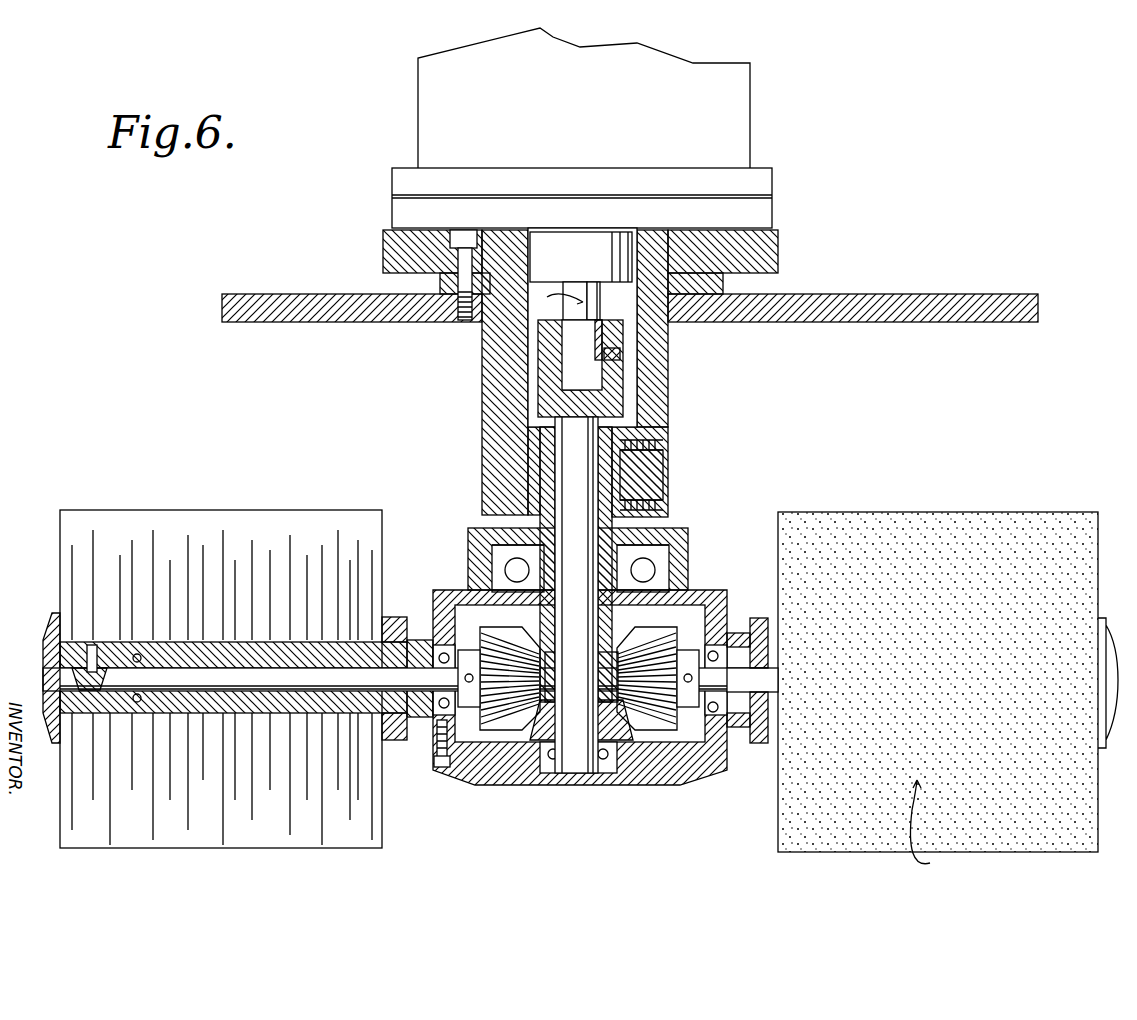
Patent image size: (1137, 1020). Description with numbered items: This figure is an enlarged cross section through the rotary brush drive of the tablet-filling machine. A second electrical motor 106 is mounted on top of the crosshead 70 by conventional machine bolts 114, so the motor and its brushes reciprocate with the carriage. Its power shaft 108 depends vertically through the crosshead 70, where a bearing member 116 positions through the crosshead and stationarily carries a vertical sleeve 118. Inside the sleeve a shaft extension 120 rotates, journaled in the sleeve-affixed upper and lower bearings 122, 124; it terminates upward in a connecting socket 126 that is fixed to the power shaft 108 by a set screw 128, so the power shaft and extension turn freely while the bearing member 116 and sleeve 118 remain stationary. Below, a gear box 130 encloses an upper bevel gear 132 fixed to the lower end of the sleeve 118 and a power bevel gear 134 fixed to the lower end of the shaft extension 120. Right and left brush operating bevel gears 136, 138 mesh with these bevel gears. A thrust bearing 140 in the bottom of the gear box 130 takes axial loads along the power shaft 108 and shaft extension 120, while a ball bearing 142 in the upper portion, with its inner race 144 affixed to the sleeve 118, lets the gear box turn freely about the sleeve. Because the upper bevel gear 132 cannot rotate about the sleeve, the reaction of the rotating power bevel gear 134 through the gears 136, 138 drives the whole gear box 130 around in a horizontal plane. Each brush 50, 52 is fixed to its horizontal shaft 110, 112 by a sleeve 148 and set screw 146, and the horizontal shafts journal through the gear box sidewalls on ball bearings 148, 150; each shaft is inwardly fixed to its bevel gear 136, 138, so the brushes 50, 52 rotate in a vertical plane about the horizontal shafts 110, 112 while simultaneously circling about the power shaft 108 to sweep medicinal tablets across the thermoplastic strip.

The brush 50 is at (952, 540).
The brush 52 is at (204, 556).
The crosshead 70 is at (886, 300).
The second electrical motor 106 is at (740, 108).
The power shaft 108 is at (582, 337).
The horizontal shaft 110 is at (746, 674).
The horizontal shaft 112 is at (384, 672).
The machine bolts 114 is at (452, 240).
The bearing member 116 is at (779, 250).
The vertical sleeve 118 is at (620, 482).
The shaft extension 120 is at (568, 495).
The upper bearing 122 is at (542, 452).
The lower bearing 124 is at (480, 562).
The connecting socket 126 is at (548, 350).
The set screw 128 is at (606, 356).
The gear box 130 is at (707, 592).
The upper bevel gear 132 is at (505, 612).
The power bevel gear 134 is at (648, 742).
The brush operating bevel gear 136 is at (676, 758).
The brush operating bevel gear 138 is at (452, 768).
The thrust bearing 140 is at (540, 780).
The ball bearing 142 is at (688, 541).
The inner race 144 is at (627, 547).
The set screw 146 is at (88, 660).
The sleeve 148 is at (723, 740).
The ball bearing 150 is at (435, 736).